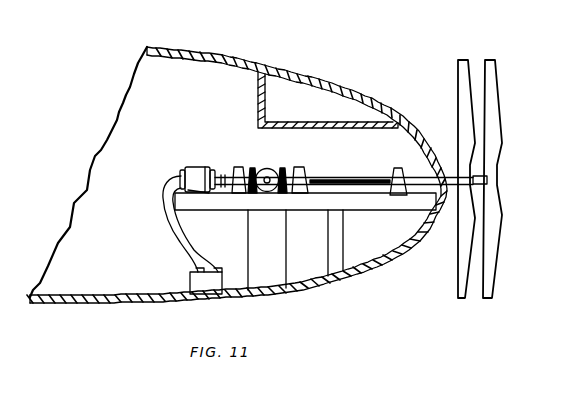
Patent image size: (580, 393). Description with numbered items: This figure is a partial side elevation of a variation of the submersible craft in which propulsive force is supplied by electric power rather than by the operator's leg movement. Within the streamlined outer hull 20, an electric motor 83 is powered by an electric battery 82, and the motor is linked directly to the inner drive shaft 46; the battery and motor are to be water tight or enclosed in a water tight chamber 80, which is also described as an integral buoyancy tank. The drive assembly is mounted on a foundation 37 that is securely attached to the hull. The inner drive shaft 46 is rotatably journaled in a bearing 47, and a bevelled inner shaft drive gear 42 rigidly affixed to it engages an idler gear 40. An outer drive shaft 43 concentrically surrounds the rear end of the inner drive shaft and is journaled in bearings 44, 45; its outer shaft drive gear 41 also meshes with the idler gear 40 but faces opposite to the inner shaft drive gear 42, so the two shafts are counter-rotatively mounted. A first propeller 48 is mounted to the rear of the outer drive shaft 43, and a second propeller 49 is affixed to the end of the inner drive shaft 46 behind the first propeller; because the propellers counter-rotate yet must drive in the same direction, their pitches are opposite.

The outer hull 20 is at (289, 72).
The water tight chamber 80 is at (303, 107).
The foundation 37 is at (333, 210).
The electric motor 83 is at (192, 166).
The outer drive shaft 43 is at (327, 177).
The inner drive shaft 46 is at (223, 174).
The bearing 47 is at (239, 166).
The idler gear 40 is at (265, 167).
The inner shaft drive gear 42 is at (253, 194).
The outer shaft drive gear 41 is at (287, 208).
The bearing 44 is at (298, 166).
The bearing 45 is at (398, 167).
The first propeller 48 is at (463, 60).
The second propeller 49 is at (493, 60).
The electric battery 82 is at (190, 282).